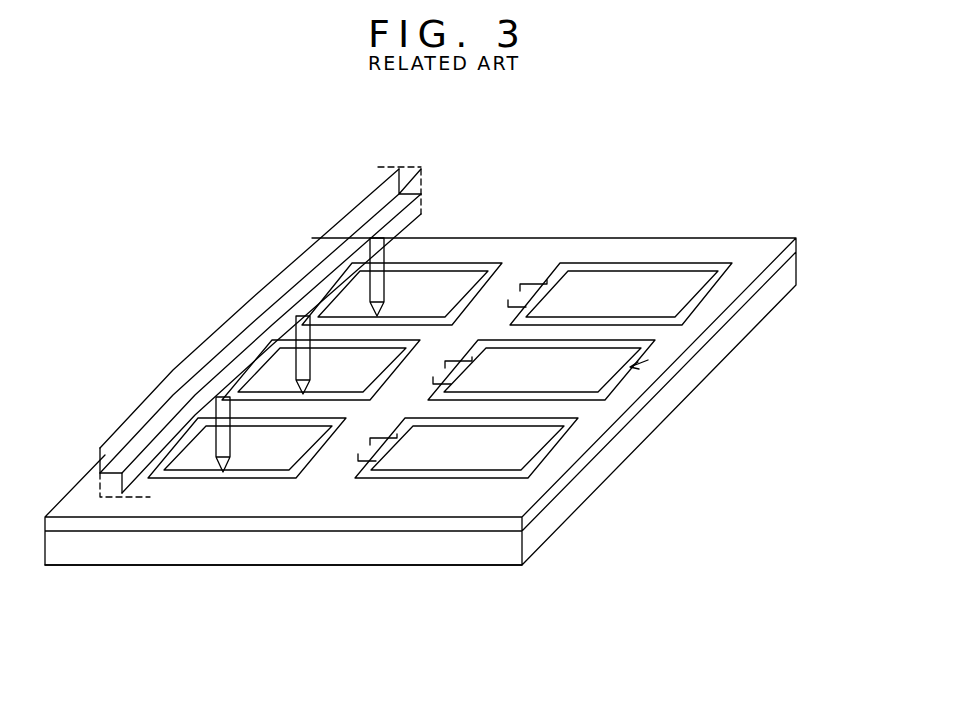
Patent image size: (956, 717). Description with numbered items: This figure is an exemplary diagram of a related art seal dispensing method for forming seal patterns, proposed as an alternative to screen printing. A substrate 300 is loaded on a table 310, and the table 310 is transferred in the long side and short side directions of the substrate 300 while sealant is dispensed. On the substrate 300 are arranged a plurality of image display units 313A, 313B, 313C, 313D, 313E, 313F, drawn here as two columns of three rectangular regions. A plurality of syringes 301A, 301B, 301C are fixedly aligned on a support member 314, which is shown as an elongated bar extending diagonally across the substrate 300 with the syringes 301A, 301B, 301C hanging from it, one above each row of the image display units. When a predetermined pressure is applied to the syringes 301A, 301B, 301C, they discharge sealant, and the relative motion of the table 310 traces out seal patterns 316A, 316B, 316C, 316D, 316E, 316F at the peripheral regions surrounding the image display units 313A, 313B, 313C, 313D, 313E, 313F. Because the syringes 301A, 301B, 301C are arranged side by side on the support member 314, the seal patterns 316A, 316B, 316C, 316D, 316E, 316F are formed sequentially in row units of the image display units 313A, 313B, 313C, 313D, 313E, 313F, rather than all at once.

The substrate 300 is at (380, 523).
The table 310 is at (468, 553).
The support member 314 is at (367, 213).
The syringe 301A is at (365, 290).
The syringe 301B is at (293, 335).
The syringe 301C is at (220, 435).
The image display unit 313A is at (632, 302).
The image display unit 313B is at (557, 380).
The image display unit 313C is at (484, 456).
The image display unit 313D is at (431, 302).
The image display unit 313E is at (356, 380).
The image display unit 313F is at (284, 456).
The seal pattern 316A is at (707, 292).
The seal pattern 316B is at (673, 363).
The seal pattern 316C is at (548, 448).
The seal pattern 316D is at (443, 262).
The seal pattern 316E is at (522, 283).
The seal pattern 316F is at (258, 480).